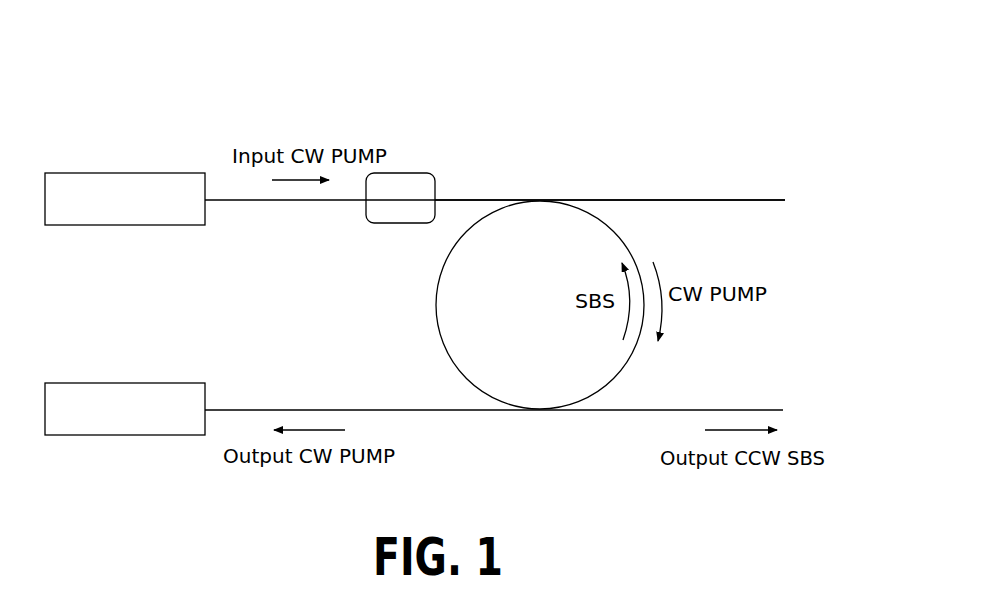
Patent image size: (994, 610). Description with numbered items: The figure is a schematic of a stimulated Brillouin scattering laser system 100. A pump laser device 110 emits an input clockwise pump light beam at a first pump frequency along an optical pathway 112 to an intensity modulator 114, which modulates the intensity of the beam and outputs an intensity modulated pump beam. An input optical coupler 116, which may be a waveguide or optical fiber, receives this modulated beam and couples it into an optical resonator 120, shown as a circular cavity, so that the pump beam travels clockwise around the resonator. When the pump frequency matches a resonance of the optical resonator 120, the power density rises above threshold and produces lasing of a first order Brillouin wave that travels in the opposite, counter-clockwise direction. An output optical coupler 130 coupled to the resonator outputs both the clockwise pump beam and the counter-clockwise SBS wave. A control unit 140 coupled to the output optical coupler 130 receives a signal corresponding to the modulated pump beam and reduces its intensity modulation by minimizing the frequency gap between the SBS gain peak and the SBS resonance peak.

The SBS laser system 100 is at (738, 95).
The pump laser device 110 is at (110, 173).
The optical pathway 112 is at (317, 203).
The intensity modulator 114 is at (407, 223).
The input optical coupler 116 is at (456, 200).
The optical resonator 120 is at (440, 335).
The output optical coupler 130 is at (472, 411).
The control unit 140 is at (110, 383).